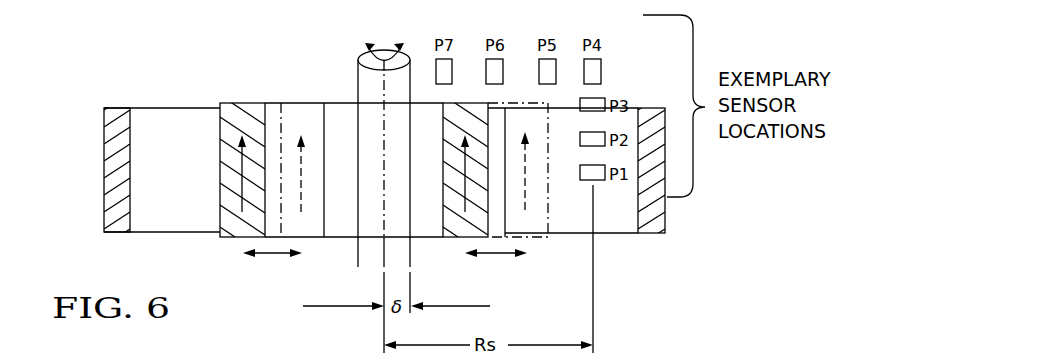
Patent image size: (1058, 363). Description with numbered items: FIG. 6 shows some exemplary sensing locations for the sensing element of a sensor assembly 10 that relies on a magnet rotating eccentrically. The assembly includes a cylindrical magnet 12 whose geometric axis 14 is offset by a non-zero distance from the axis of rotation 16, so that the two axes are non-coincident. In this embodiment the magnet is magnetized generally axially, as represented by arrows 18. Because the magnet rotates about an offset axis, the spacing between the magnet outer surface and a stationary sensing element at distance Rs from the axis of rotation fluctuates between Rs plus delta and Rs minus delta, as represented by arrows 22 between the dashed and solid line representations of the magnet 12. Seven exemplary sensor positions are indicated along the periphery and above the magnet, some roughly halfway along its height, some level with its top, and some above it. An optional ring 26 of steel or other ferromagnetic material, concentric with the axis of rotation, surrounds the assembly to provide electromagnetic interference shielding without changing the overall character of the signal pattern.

The sensor assembly 10 is at (126, 49).
The cylindrical magnet 12 is at (606, 258).
The geometric axis 14 is at (357, 76).
The axis of rotation 16 is at (361, 52).
The arrows 18 is at (243, 157).
The arrows 22 is at (272, 255).
The ring 26 is at (122, 225).